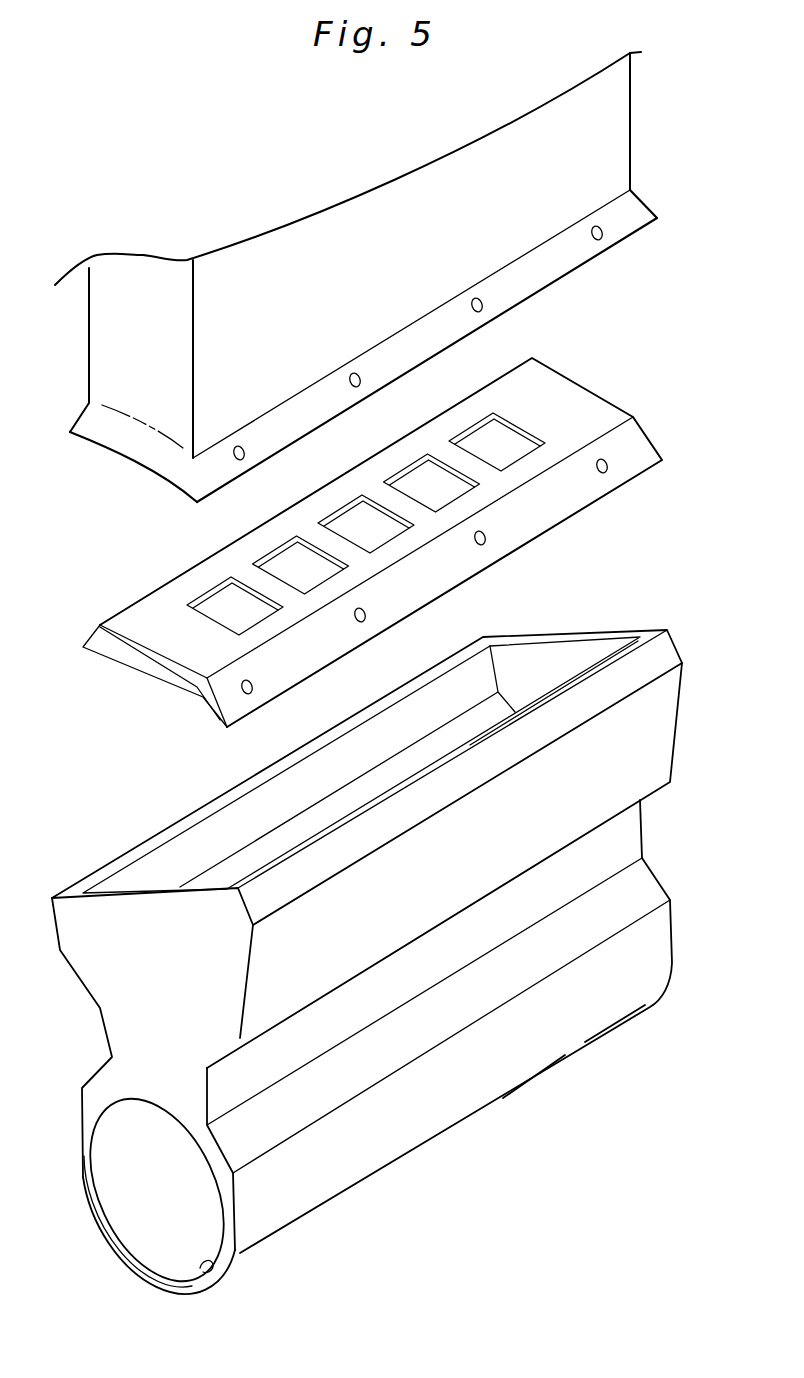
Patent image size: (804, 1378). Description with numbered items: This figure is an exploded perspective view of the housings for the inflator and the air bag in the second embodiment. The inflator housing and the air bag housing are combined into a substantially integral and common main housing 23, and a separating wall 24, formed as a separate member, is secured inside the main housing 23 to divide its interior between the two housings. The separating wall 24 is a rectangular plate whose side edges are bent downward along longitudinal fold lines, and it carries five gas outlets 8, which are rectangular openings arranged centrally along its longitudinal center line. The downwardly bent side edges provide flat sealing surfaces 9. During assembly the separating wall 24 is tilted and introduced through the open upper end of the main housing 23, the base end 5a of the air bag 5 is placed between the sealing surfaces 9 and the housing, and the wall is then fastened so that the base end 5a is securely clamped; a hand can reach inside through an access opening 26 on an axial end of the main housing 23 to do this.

The air bag 5 is at (365, 277).
The base end of air bag 5a is at (558, 274).
The separating wall 24 is at (372, 542).
The gas outlets 8 is at (213, 617).
The sealing surfaces 9 is at (565, 497).
The main housing 23 is at (378, 983).
The access opening 26 is at (197, 1270).